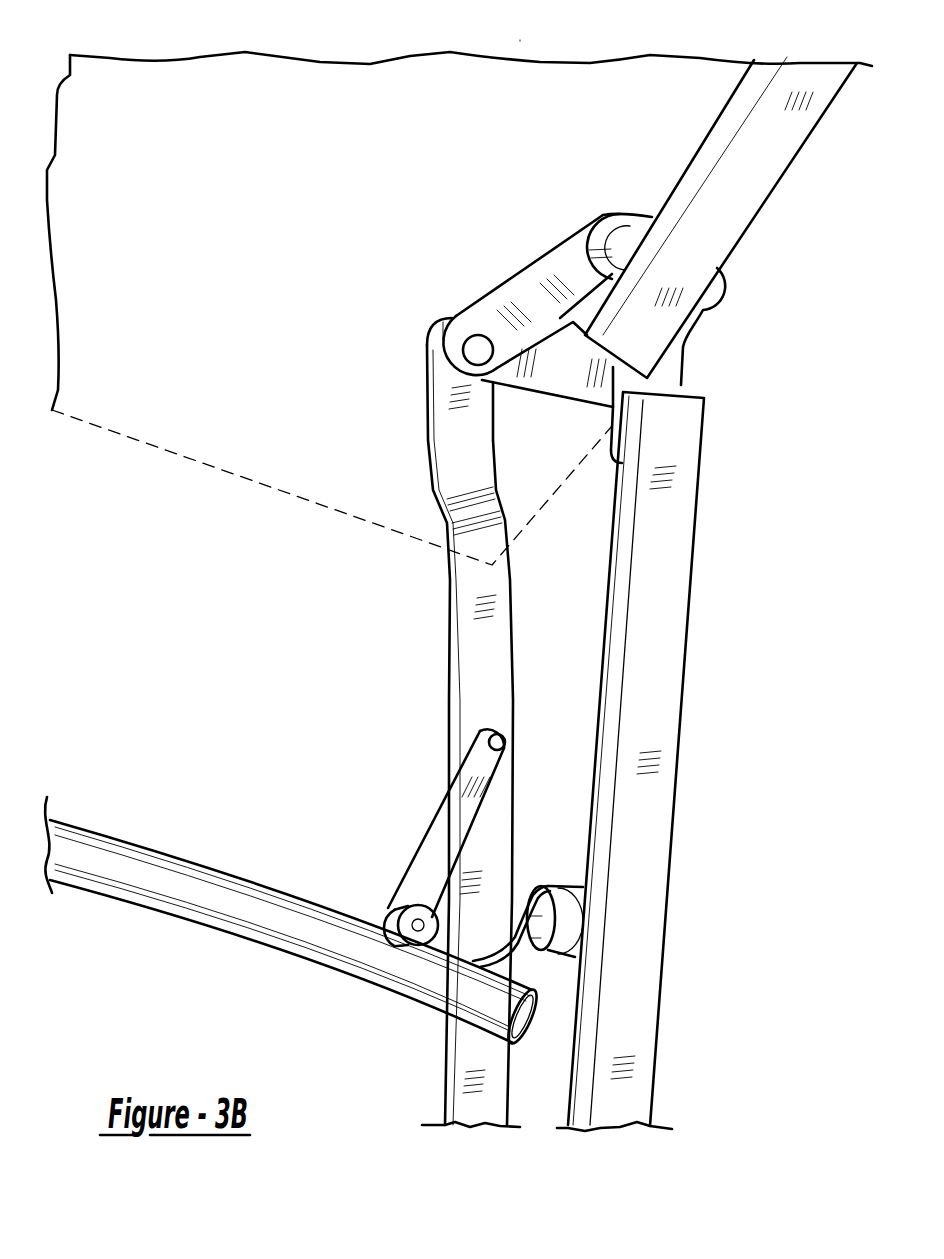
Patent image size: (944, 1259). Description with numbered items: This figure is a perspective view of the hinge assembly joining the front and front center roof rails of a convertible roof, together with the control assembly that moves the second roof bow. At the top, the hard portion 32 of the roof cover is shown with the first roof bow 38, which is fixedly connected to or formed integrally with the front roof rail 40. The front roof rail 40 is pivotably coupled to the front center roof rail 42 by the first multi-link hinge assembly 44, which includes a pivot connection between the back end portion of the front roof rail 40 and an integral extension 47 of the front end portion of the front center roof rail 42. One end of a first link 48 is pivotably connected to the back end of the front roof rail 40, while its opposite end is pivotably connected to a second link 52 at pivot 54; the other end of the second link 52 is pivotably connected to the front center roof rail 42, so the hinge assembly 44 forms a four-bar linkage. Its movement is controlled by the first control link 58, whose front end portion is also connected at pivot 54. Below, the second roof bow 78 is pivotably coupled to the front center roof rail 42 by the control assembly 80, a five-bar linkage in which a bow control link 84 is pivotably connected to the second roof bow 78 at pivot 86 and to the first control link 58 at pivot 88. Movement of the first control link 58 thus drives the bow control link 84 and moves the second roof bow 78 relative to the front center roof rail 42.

The hard portion 32 is at (459, 231).
The first roof bow 38 is at (332, 363).
The first multi-link hinge assembly 44 is at (571, 64).
The front roof rail 40 is at (721, 217).
The integral extension 47 is at (741, 326).
The front center roof rail 42 is at (691, 761).
The first link 48 is at (553, 277).
The second link 52 is at (552, 411).
The pivot 54 is at (441, 298).
The first control link 58 is at (432, 722).
The control assembly 80 is at (435, 811).
The bow control link 84 is at (411, 823).
The pivot 86 is at (392, 994).
The pivot 88 is at (526, 702).
The second roof bow 78 is at (293, 922).